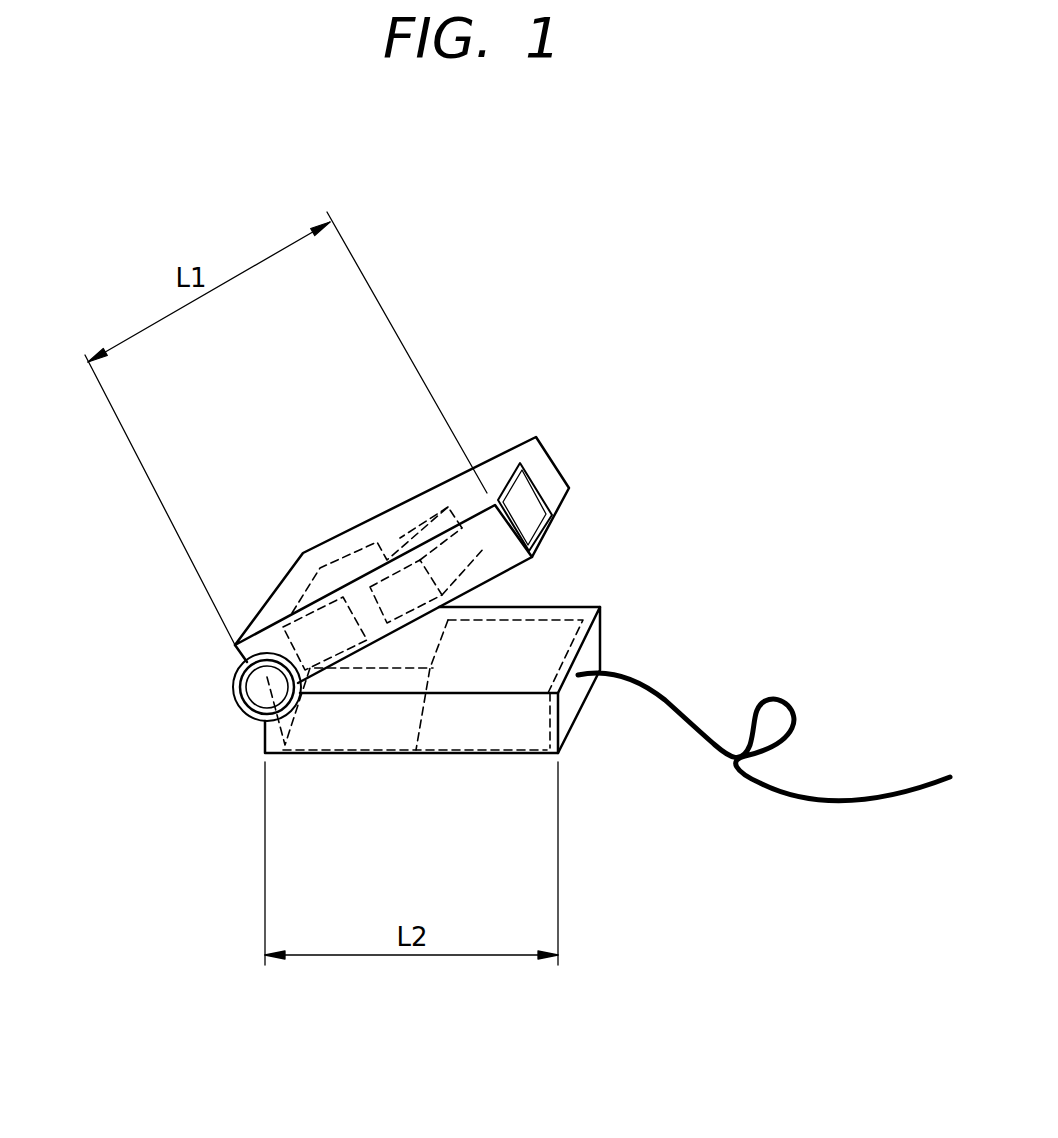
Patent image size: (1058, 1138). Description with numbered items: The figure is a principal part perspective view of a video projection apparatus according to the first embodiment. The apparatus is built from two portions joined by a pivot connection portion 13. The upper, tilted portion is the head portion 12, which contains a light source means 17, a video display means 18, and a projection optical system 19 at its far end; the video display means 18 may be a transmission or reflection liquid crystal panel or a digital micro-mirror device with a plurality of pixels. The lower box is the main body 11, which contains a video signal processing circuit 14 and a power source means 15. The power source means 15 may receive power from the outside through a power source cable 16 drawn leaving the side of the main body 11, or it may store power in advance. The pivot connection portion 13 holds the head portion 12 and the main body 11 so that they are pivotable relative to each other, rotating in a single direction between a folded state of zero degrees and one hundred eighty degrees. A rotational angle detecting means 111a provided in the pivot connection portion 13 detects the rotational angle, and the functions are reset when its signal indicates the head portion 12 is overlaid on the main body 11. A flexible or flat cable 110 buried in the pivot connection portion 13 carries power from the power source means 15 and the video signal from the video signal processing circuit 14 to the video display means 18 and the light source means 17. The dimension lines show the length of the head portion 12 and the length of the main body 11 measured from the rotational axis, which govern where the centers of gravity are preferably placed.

The main body 11 is at (270, 735).
The head portion 12 is at (237, 640).
The pivot connection portion 13 is at (233, 703).
The cable 110 is at (245, 652).
The rotational angle detecting means 111a is at (228, 682).
The video signal processing circuit 14 is at (363, 723).
The power source means 15 is at (487, 723).
The power source cable 16 is at (690, 730).
The light source means 17 is at (323, 582).
The video display means 18 is at (413, 535).
The projection optical system 19 is at (487, 495).